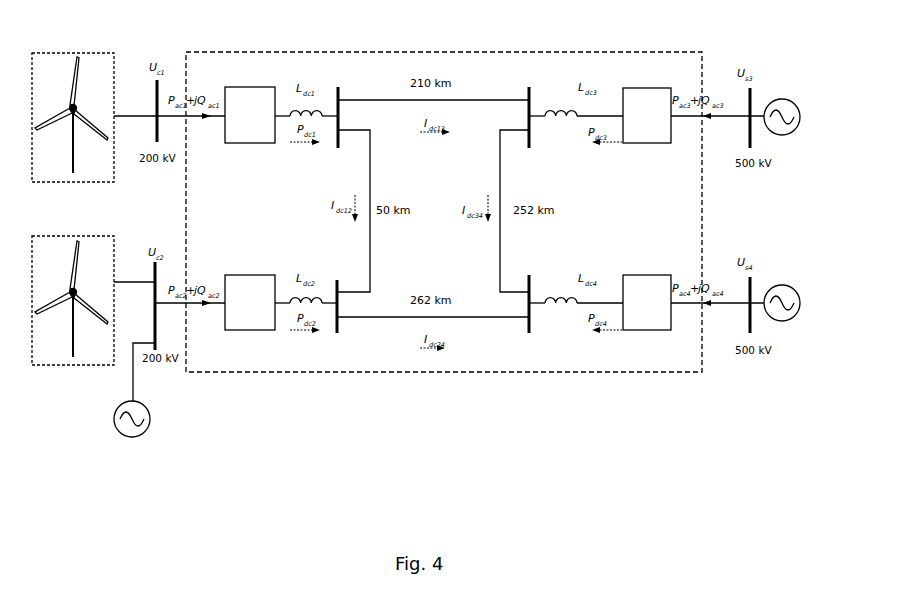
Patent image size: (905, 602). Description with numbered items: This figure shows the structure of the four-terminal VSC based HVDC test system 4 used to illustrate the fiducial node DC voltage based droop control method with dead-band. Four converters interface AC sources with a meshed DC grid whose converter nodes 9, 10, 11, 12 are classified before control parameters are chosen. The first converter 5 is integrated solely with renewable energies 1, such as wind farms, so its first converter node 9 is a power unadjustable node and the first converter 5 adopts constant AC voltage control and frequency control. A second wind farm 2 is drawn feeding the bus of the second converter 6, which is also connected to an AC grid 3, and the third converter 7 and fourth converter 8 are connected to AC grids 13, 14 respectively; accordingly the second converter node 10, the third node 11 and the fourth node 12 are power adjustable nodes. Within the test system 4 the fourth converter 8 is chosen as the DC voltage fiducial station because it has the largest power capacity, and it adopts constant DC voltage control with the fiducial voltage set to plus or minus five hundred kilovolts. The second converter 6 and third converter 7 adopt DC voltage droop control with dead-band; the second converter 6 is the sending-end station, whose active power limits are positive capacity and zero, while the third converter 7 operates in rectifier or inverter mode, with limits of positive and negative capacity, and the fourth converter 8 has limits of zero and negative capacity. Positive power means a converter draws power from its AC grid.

The renewable energies 1 is at (58, 53).
The second wind farm 2 is at (83, 365).
The AC grid 3 is at (146, 429).
The four-terminal VSC based HVDC test system 4 is at (438, 372).
The first converter 5 is at (273, 87).
The second converter 6 is at (273, 331).
The third converter 7 is at (623, 88).
The fourth converter 8 is at (618, 331).
The first converter node 9 is at (338, 100).
The second converter node 10 is at (340, 333).
The third node 11 is at (529, 90).
The fourth node 12 is at (527, 333).
The AC grid 13 is at (795, 96).
The AC grid 14 is at (793, 284).